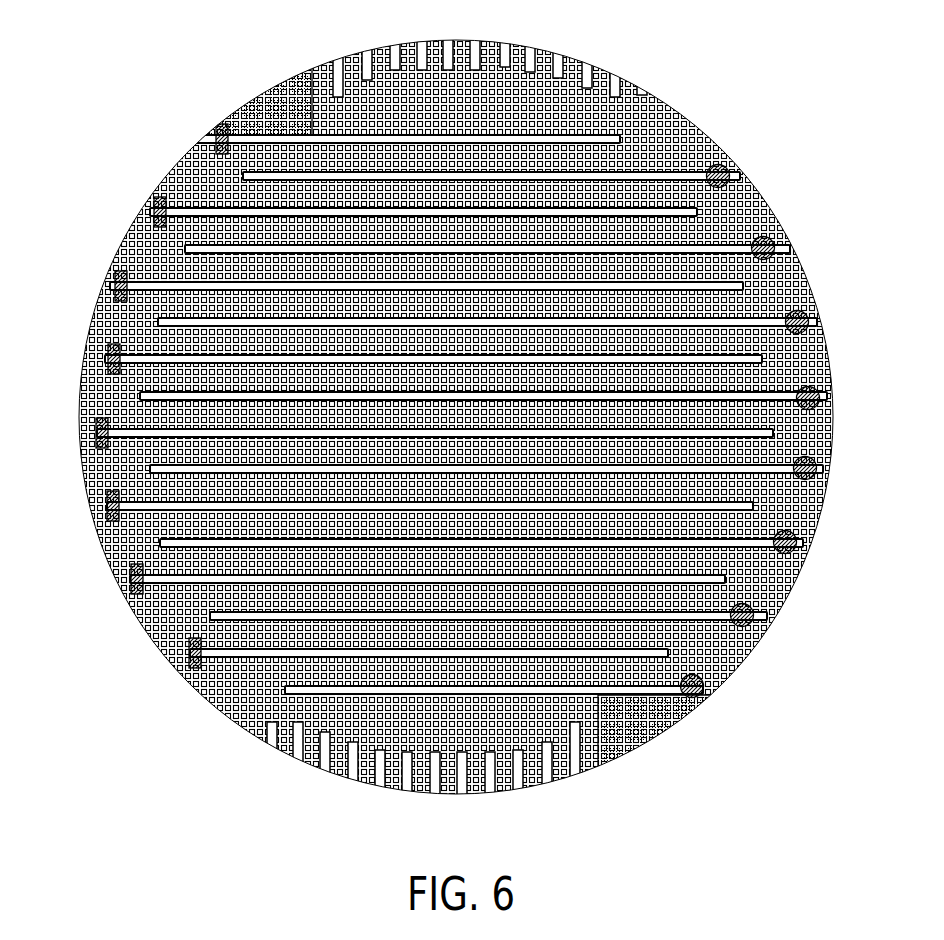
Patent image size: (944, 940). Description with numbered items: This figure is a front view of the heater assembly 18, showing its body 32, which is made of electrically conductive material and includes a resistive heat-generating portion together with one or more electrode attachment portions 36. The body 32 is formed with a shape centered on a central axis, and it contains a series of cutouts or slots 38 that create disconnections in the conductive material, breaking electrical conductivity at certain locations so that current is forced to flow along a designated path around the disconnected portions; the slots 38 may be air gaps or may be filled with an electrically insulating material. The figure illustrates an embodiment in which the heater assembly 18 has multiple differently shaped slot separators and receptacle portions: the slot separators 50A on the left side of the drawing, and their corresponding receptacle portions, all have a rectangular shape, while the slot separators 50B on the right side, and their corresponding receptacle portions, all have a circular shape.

The heater assembly 18 is at (449, 426).
The body 32 is at (667, 133).
The electrode attachment portion 36 is at (282, 117).
The slots 38 is at (280, 653).
The slot separators 50A is at (192, 663).
The slot separators 50B is at (765, 238).